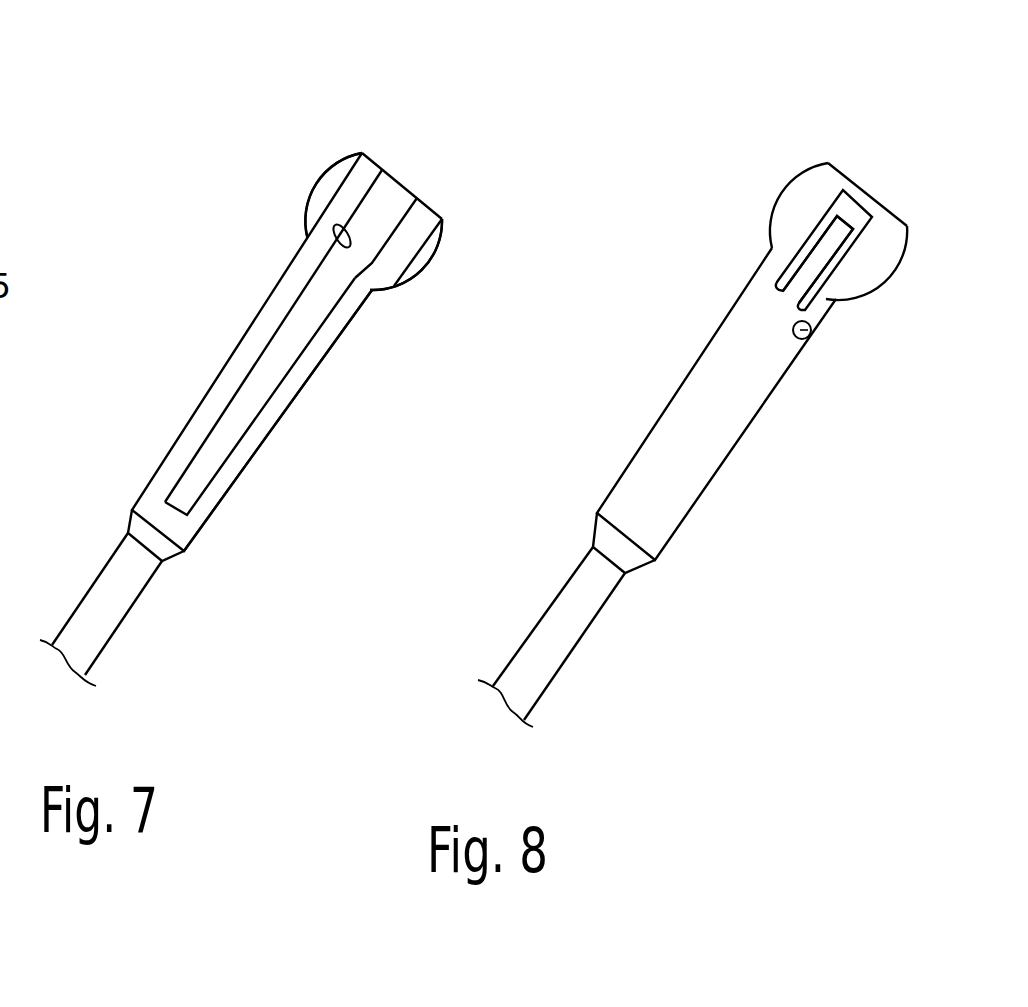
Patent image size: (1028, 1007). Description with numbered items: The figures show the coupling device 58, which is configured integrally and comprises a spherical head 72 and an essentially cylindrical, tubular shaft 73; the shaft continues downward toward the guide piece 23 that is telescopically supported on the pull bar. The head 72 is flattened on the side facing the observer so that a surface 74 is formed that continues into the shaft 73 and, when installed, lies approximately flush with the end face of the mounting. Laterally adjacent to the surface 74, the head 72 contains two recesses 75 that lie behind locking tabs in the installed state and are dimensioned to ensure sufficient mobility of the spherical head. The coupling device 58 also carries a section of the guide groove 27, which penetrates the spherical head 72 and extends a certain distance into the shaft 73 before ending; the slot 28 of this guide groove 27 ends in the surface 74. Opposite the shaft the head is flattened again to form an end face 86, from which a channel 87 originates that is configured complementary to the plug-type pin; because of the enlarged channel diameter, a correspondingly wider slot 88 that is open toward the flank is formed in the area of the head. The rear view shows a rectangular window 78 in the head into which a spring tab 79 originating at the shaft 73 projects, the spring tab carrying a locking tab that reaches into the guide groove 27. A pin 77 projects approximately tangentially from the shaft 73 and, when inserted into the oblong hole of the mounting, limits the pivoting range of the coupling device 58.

In FIG. 7, the coupling device 58 is at (175, 208).
In FIG. 8, the coupling device 58 is at (694, 202).
In FIG. 7, the spherical head 72 is at (380, 138).
In FIG. 8, the spherical head 72 is at (921, 244).
In FIG. 7, the recesses 75 is at (322, 188).
In FIG. 7, the surface 74 is at (404, 246).
In FIG. 7, the channel 87 is at (409, 203).
In FIG. 7, the guide groove 27 is at (371, 233).
In FIG. 7, the slot 28 is at (272, 378).
In FIG. 7, the slot 88 is at (336, 242).
In FIG. 7, the shaft 73 is at (269, 463).
In FIG. 7, the guide piece 23 is at (105, 625).
In FIG. 8, the surface 86 is at (840, 167).
In FIG. 8, the rectangular window 78 is at (852, 212).
In FIG. 8, the spring tab 79 is at (822, 252).
In FIG. 8, the pin 77 is at (812, 338).